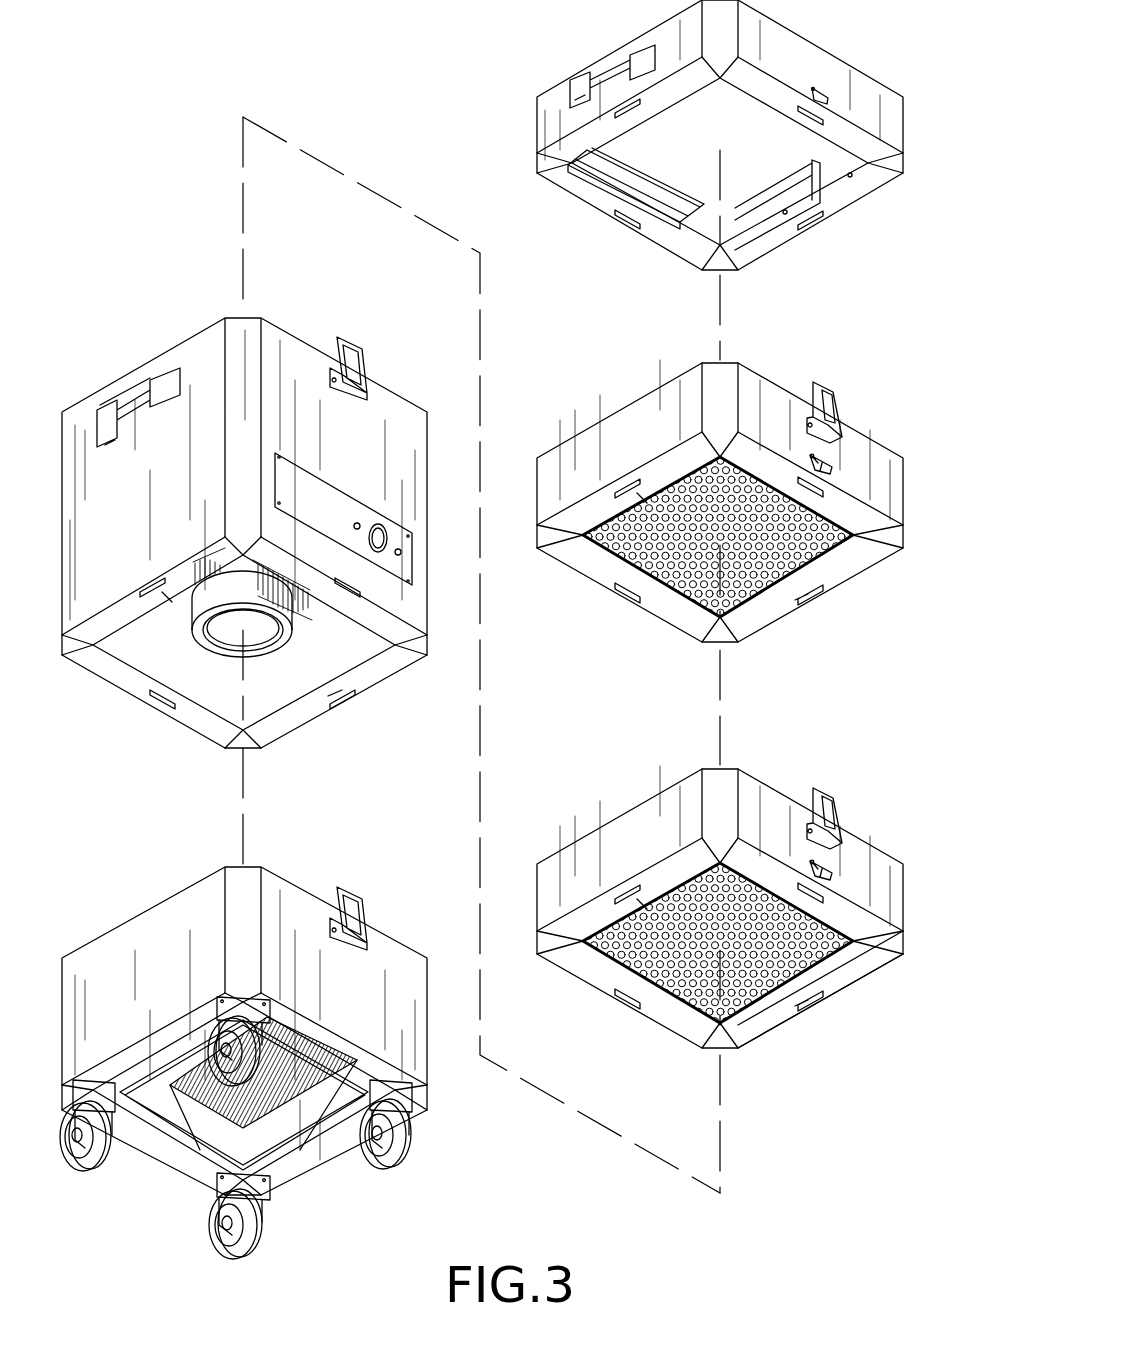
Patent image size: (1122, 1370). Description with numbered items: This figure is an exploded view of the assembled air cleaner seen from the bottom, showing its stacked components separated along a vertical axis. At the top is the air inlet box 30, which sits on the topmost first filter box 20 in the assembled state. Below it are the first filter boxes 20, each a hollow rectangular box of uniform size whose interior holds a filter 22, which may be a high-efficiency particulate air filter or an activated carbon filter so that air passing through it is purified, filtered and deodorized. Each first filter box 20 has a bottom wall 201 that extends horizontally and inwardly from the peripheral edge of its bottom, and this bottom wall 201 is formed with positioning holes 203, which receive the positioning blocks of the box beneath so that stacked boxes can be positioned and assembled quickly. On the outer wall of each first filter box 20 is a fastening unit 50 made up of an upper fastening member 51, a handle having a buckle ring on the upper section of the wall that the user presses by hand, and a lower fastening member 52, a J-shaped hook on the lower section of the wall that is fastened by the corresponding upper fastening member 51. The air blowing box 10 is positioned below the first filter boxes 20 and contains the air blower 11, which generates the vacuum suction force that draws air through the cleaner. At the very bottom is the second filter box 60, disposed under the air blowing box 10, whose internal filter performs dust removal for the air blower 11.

The air blowing box 10 is at (244, 499).
The air blower 11 is at (270, 643).
The first filter box 20 is at (753, 691).
The bottom wall 201 is at (850, 975).
The positioning hole 203 is at (800, 993).
The filter 22 is at (750, 993).
The air inlet box 30 is at (535, 110).
The fastening unit 50 is at (888, 586).
The upper fastening member 51 is at (825, 380).
The lower fastening member 52 is at (832, 468).
The second filter box 60 is at (393, 935).